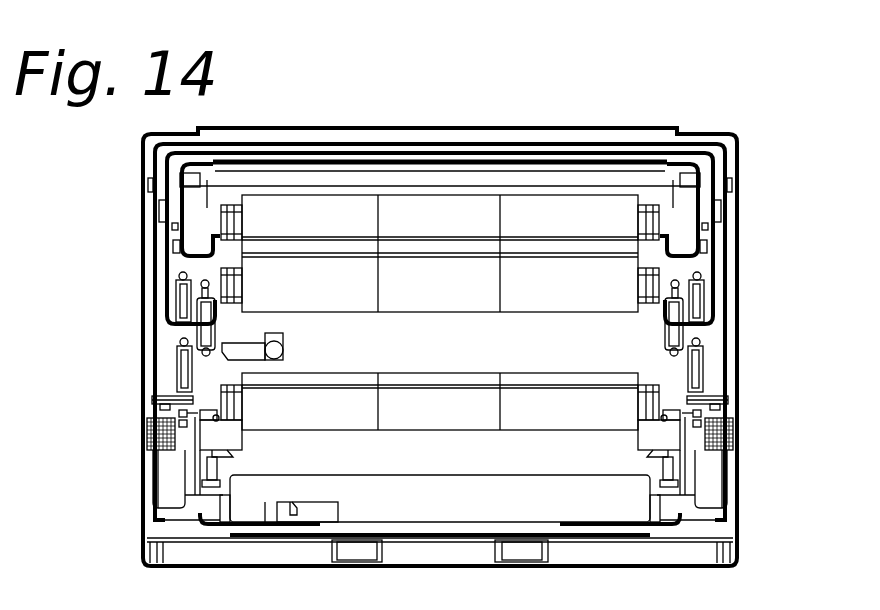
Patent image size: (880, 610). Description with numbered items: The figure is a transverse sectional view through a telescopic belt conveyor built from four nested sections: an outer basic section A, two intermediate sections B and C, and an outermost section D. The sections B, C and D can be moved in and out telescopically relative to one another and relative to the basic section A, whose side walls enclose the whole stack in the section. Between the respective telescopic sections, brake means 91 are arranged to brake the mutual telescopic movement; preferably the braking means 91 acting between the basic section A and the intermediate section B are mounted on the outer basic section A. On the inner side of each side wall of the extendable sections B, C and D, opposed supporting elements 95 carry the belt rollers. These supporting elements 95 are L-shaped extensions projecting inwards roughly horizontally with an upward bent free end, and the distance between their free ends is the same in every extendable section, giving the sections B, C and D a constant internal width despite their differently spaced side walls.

The brake means 91 is at (150, 214).
The supporting elements 95 is at (213, 243).
The basic section A is at (741, 516).
The intermediate section B is at (730, 394).
The intermediate section C is at (727, 247).
The outermost section D is at (701, 172).